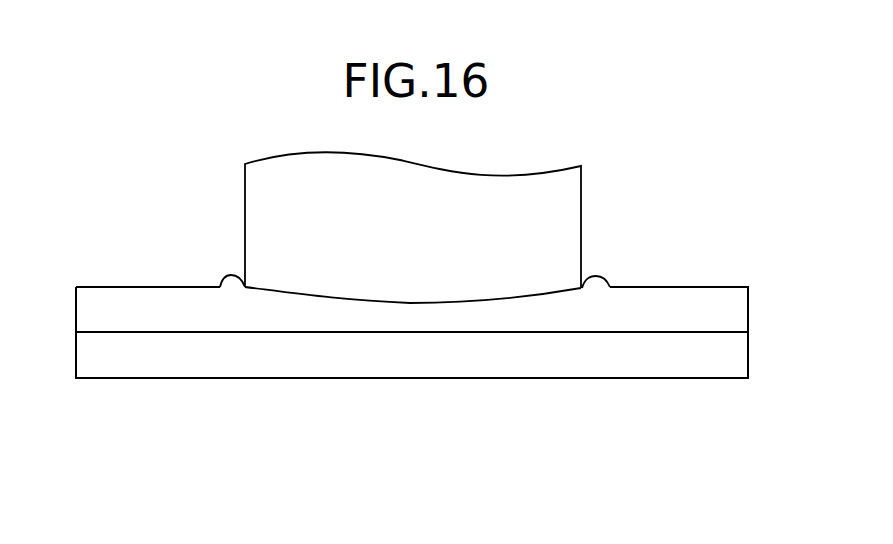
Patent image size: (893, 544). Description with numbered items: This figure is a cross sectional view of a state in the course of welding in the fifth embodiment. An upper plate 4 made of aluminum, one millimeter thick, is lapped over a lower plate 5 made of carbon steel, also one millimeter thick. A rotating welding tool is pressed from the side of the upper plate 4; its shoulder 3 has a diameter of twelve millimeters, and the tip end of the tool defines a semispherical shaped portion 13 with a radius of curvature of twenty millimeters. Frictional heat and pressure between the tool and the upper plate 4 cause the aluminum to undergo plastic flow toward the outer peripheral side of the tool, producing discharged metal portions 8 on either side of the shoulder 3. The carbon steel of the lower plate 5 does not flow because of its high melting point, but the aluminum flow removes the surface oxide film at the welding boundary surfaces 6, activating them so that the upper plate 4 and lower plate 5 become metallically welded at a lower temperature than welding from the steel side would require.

The shoulder 3 is at (582, 200).
The upper plate 4 is at (100, 287).
The lower plate 5 is at (100, 378).
The welding boundary surface 6 is at (423, 333).
The discharged metal portion 8 is at (220, 273).
The semispherical shaped portion 13 is at (365, 300).